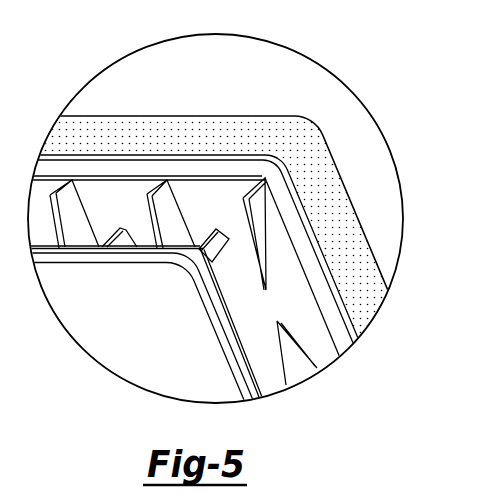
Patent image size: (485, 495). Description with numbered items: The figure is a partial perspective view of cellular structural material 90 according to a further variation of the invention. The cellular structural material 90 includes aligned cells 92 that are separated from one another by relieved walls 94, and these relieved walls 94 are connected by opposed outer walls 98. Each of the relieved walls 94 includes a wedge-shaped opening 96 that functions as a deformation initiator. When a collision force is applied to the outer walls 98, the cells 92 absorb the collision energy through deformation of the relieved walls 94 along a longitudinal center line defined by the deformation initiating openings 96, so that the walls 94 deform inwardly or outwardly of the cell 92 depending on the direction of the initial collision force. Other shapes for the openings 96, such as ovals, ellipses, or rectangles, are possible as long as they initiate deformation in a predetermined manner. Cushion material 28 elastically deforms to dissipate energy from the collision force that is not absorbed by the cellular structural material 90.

The cushion material 28 is at (118, 130).
The cellular structural material 90 is at (345, 313).
The aligned cells 92 is at (215, 203).
The relieved walls 94 is at (76, 221).
The wedge-shaped openings 96 is at (250, 243).
The opposed outer walls 98 is at (133, 343).